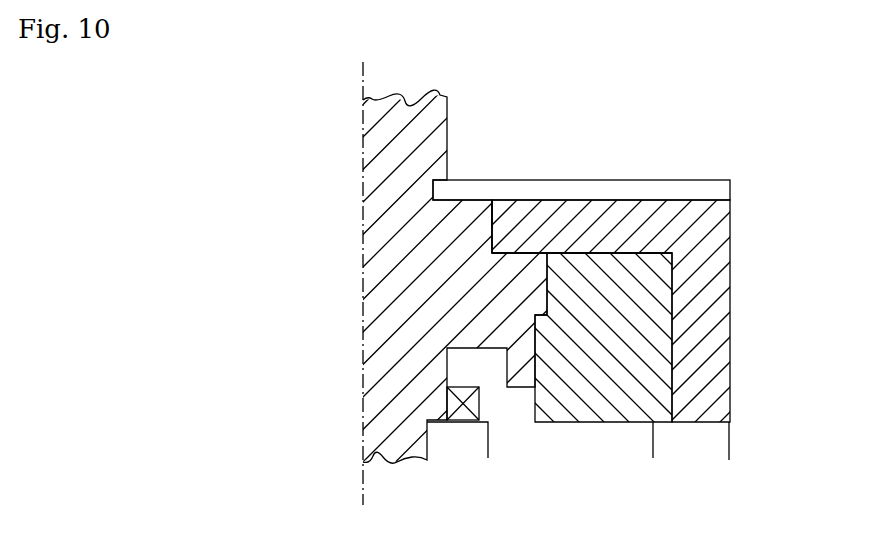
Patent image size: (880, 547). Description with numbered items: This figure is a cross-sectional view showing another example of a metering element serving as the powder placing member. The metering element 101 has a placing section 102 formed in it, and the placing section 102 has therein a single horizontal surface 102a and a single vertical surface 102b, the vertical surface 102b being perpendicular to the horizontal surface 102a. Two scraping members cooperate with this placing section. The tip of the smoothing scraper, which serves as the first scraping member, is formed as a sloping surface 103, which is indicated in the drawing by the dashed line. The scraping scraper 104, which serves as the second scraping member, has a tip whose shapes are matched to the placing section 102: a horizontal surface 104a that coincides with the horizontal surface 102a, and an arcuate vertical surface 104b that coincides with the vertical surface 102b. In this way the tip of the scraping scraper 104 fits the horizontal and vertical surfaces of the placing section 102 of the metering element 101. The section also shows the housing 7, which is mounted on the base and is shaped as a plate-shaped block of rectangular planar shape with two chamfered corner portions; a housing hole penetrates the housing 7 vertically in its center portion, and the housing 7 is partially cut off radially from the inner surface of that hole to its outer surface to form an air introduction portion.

The metering element 101 is at (378, 303).
The placing section 102 is at (512, 249).
The horizontal surface 102a is at (518, 252).
The vertical surface 102b is at (497, 217).
The sloping surface 103 is at (532, 196).
The scraping scraper 104 is at (710, 340).
The horizontal surface 104a is at (524, 255).
The arcuate vertical surface 104b is at (500, 222).
The housing 7 is at (601, 408).